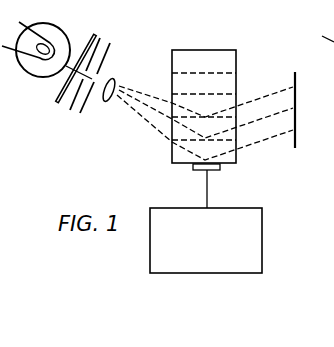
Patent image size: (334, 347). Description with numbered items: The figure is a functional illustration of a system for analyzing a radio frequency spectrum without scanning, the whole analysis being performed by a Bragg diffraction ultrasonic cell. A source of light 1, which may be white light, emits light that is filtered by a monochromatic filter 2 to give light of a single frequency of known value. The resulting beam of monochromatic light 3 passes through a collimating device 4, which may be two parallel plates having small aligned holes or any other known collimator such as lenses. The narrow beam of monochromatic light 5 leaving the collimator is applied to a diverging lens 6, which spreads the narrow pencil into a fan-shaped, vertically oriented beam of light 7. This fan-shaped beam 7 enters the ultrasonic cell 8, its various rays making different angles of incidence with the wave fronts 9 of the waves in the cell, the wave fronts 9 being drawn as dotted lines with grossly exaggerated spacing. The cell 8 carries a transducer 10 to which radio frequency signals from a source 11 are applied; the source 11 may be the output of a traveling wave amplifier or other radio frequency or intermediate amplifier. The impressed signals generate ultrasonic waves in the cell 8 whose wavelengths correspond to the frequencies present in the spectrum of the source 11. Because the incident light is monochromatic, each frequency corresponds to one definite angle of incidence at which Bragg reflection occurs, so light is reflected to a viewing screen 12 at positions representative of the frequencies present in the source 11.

The source of light 1 is at (55, 26).
The monochromatic filter 2 is at (95, 35).
The beam of monochromatic light 3 is at (70, 67).
The collimating device 4 is at (110, 43).
The narrow beam of monochromatic light 5 is at (88, 80).
The diverging lens 6 is at (112, 80).
The fan-shaped beam of light 7 is at (158, 108).
The ultrasonic cell 8 is at (222, 55).
The wave fronts 9 is at (228, 72).
The transducer 10 is at (220, 168).
The source 11 is at (262, 215).
The viewing screen 12 is at (297, 133).